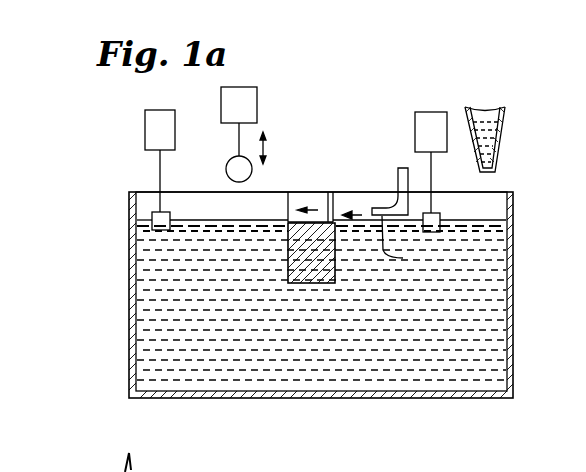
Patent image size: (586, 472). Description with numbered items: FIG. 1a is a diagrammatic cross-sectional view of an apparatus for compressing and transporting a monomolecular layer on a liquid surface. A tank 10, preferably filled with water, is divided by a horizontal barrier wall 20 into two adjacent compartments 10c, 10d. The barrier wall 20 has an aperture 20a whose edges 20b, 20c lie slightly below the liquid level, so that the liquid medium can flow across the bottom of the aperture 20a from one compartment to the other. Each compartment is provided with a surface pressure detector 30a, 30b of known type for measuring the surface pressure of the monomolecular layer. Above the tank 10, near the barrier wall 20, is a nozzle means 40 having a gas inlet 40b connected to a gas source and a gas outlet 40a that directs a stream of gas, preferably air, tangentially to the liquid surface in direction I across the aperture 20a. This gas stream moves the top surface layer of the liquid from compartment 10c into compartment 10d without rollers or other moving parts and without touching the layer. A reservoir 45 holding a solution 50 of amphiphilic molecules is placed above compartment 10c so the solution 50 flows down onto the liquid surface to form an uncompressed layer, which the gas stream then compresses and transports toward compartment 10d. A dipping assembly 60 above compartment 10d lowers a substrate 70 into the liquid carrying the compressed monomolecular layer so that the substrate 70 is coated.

The tank 10 is at (128, 336).
The compartment 10c is at (433, 340).
The compartment 10d is at (200, 345).
The barrier wall 20 is at (302, 283).
The aperture 20a is at (318, 228).
The edge of aperture 20b is at (338, 224).
The edge of aperture 20c is at (287, 220).
The surface pressure detector 30a is at (147, 129).
The surface pressure detector 30b is at (435, 112).
The nozzle means 40 is at (382, 207).
The gas outlet 40a is at (409, 242).
The gas inlet 40b is at (398, 178).
The reservoir 45 is at (503, 112).
The solution 50 is at (487, 130).
The dipping assembly 60 is at (250, 98).
The substrate 70 is at (226, 169).
The direction of gas stream I is at (362, 212).